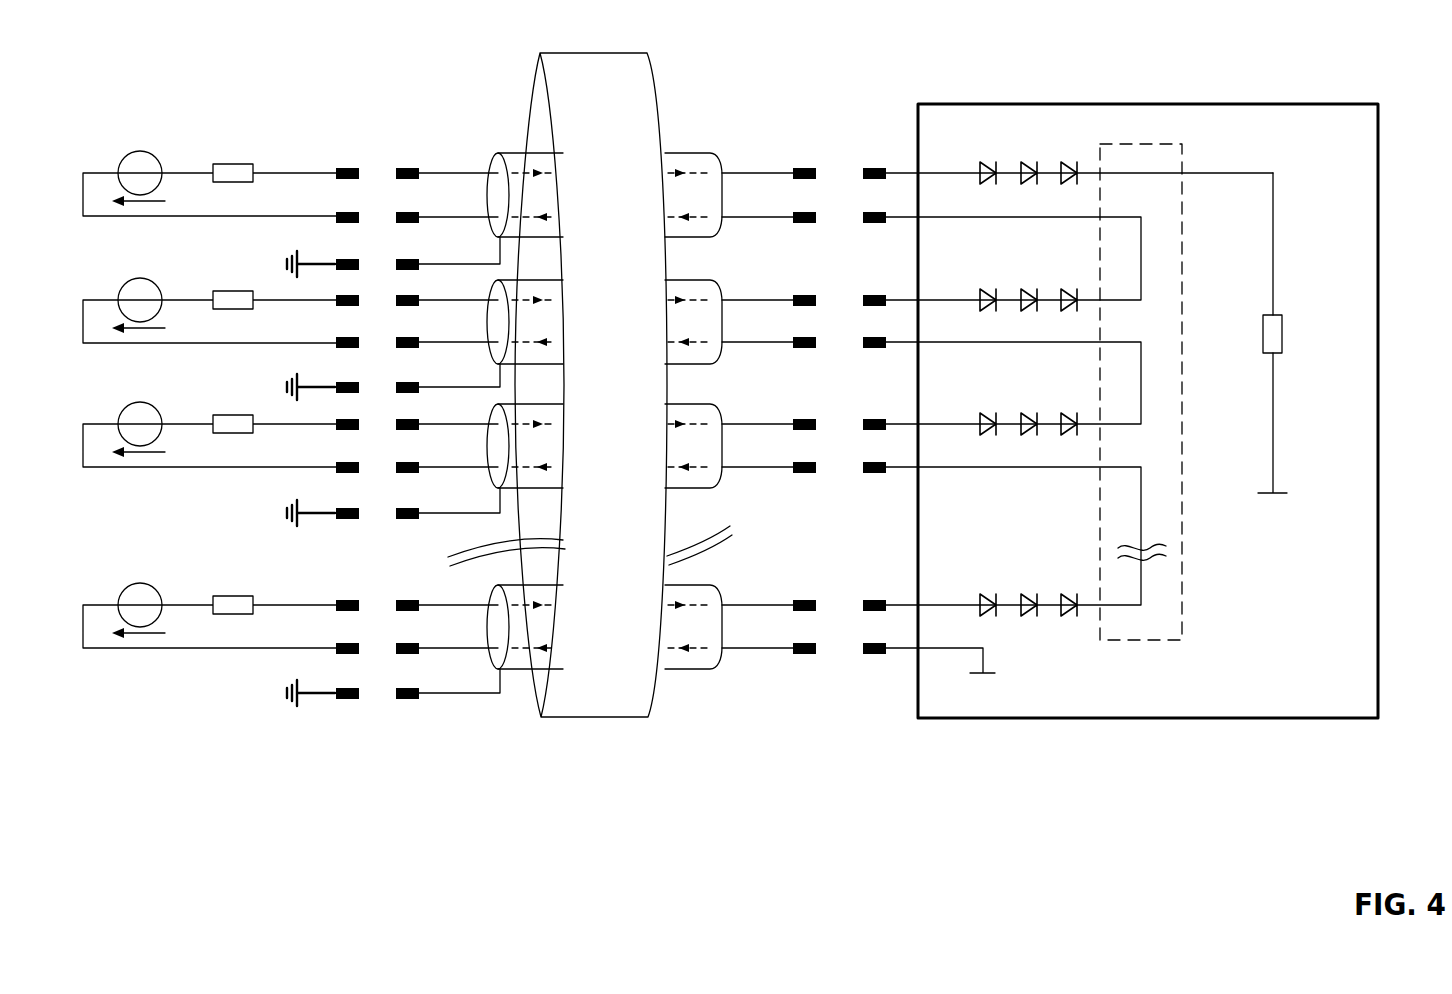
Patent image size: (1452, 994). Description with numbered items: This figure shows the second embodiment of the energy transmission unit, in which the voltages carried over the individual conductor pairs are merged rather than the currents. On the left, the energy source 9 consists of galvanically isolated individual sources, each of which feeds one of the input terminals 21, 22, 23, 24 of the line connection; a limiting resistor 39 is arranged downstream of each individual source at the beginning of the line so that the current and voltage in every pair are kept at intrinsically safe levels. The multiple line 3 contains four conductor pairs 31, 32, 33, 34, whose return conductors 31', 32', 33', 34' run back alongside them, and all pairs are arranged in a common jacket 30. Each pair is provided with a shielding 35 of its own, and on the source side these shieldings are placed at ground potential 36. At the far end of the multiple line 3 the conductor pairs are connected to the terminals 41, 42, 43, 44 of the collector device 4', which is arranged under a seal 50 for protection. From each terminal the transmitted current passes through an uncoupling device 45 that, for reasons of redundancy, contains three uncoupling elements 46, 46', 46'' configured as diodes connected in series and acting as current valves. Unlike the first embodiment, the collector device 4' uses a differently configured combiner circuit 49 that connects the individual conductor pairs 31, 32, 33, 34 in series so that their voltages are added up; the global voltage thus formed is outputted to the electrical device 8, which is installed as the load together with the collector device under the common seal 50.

The multiple line 3 is at (385, 730).
The secondary-side circuit 4' is at (1052, 859).
The electrical device 8 is at (1283, 333).
The energy source 9 is at (175, 697).
The input terminal 21 is at (403, 193).
The input terminal 22 is at (415, 323).
The input terminal 23 is at (415, 445).
The input terminal 24 is at (403, 623).
The common jacket 30 is at (644, 94).
The conductor pair 31 is at (694, 168).
The first secondary line 31' is at (757, 233).
The conductor pair 32 is at (710, 295).
The second secondary line 32' is at (775, 350).
The conductor pair 33 is at (715, 426).
The third secondary line 33' is at (757, 483).
The conductor pair 34 is at (715, 609).
The fourth secondary line 34' is at (757, 665).
The shielding 35 is at (425, 263).
The ground potential 36 is at (300, 263).
The limiting resistor 39 is at (235, 164).
The terminal 41 is at (873, 195).
The terminal 42 is at (856, 297).
The terminal 43 is at (875, 443).
The terminal 44 is at (873, 605).
The uncoupling device 45 is at (967, 723).
The uncoupling element 46 is at (977, 577).
The uncoupling element 46' is at (1021, 577).
The uncoupling element 46'' is at (1070, 577).
The combiner circuit 49 is at (1140, 640).
The seal 50 is at (1305, 700).